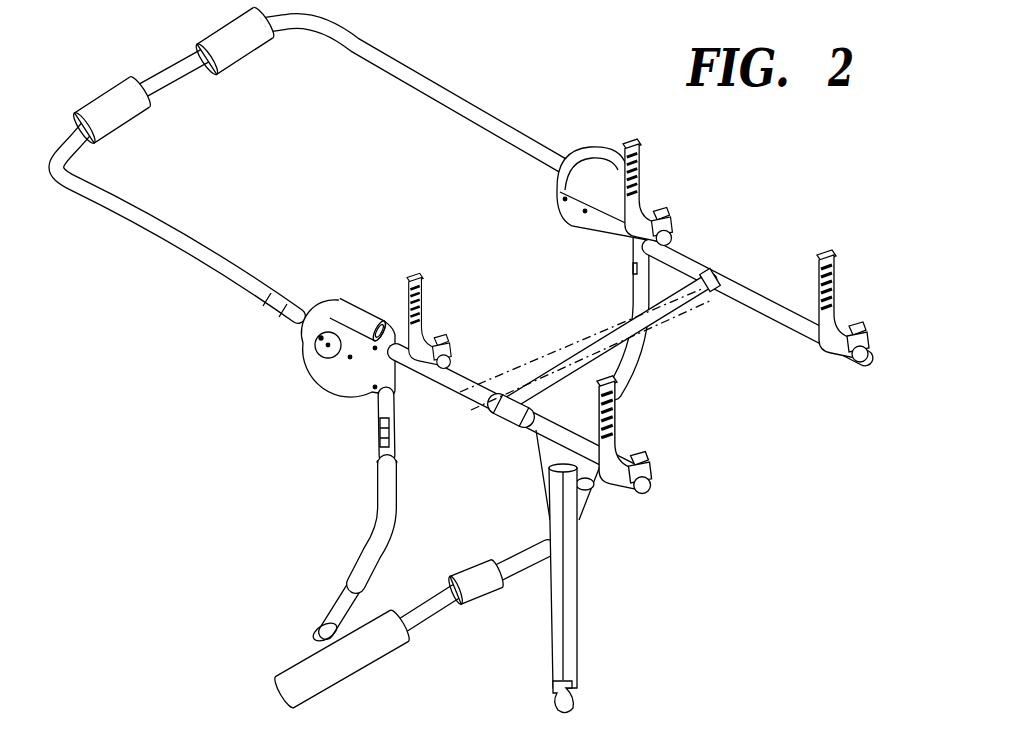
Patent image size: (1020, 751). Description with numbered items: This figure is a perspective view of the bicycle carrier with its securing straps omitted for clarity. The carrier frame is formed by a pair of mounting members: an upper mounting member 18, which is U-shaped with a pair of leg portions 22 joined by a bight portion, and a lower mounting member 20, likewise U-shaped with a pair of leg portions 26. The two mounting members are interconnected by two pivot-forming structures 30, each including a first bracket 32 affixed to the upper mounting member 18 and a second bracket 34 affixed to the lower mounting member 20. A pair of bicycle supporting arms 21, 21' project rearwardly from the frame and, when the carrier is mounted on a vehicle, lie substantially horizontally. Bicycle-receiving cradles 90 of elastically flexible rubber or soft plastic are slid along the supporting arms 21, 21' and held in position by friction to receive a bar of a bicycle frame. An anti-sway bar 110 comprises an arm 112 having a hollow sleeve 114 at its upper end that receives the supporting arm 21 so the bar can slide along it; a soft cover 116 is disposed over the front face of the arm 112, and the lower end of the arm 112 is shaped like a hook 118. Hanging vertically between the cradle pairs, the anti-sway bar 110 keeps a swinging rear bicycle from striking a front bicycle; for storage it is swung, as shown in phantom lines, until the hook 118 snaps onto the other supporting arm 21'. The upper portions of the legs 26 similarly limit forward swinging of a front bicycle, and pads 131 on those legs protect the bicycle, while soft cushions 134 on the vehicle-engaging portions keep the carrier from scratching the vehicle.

The upper mounting member 18 is at (427, 97).
The lower mounting member 20 is at (343, 569).
The bicycle supporting arm 21 is at (518, 414).
The bicycle supporting arm 21' is at (757, 279).
The leg portions 22 is at (193, 238).
The leg portions 26 is at (633, 410).
The pivot-forming structure 30 is at (597, 140).
The first bracket 32 is at (337, 303).
The second bracket 34 is at (347, 380).
The bicycle-receiving cradle 90 is at (650, 200).
The anti-sway bar 110 is at (651, 338).
The arm 112 is at (540, 480).
The hollow sleeve 114 is at (530, 425).
The cover 116 is at (570, 617).
The hook 118 is at (577, 697).
The pads 131 is at (377, 470).
The soft cushions 134 is at (110, 97).